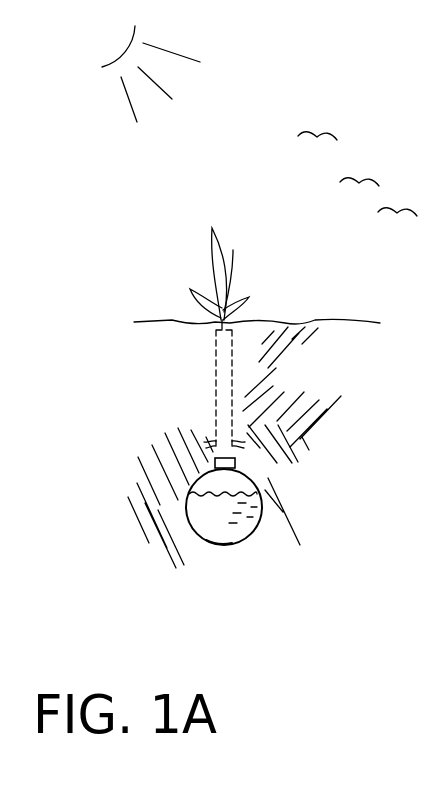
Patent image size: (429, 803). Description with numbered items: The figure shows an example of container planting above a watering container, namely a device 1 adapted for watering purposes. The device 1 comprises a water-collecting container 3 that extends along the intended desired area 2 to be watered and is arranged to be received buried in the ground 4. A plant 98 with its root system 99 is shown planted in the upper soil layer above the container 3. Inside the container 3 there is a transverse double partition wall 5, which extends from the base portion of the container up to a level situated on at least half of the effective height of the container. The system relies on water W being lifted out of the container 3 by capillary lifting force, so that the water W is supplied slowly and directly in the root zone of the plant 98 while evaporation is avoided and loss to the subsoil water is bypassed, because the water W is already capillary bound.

The device 1 is at (154, 581).
The intended desired area to be watered 2 is at (106, 410).
The water-collecting container 3 is at (251, 541).
The ground 4 is at (293, 470).
The transverse double partition wall 5 is at (216, 552).
The plant 98 is at (218, 263).
The root system 99 is at (216, 375).
The water W is at (222, 513).